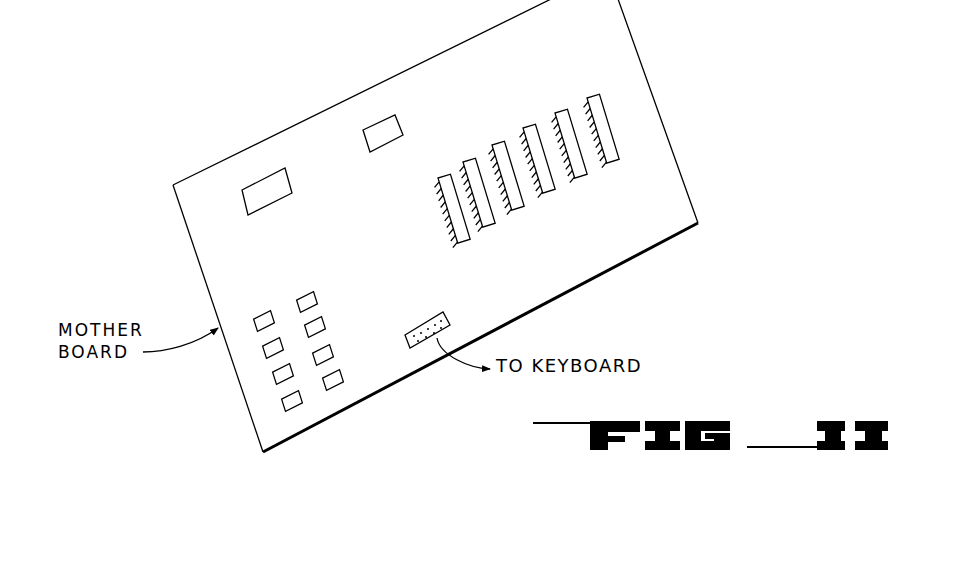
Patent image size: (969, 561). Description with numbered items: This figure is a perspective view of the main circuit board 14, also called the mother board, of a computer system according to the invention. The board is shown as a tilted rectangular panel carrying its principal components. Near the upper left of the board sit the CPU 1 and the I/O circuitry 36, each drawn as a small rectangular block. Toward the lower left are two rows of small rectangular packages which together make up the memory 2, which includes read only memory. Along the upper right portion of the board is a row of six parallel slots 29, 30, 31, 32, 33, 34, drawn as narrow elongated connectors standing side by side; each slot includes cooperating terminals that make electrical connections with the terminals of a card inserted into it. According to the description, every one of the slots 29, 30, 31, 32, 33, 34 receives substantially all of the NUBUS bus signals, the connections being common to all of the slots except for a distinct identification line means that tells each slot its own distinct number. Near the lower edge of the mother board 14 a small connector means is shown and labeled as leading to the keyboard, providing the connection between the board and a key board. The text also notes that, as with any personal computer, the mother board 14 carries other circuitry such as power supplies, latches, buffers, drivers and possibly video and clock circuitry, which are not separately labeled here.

The CPU 1 is at (266, 174).
The memory 2 is at (253, 322).
The main circuit board 14 is at (671, 141).
The slot 29 is at (466, 243).
The slot 30 is at (491, 227).
The slot 31 is at (520, 211).
The slot 32 is at (528, 127).
The slot 33 is at (583, 180).
The slot 34 is at (594, 97).
The I/O circuitry 36 is at (378, 120).